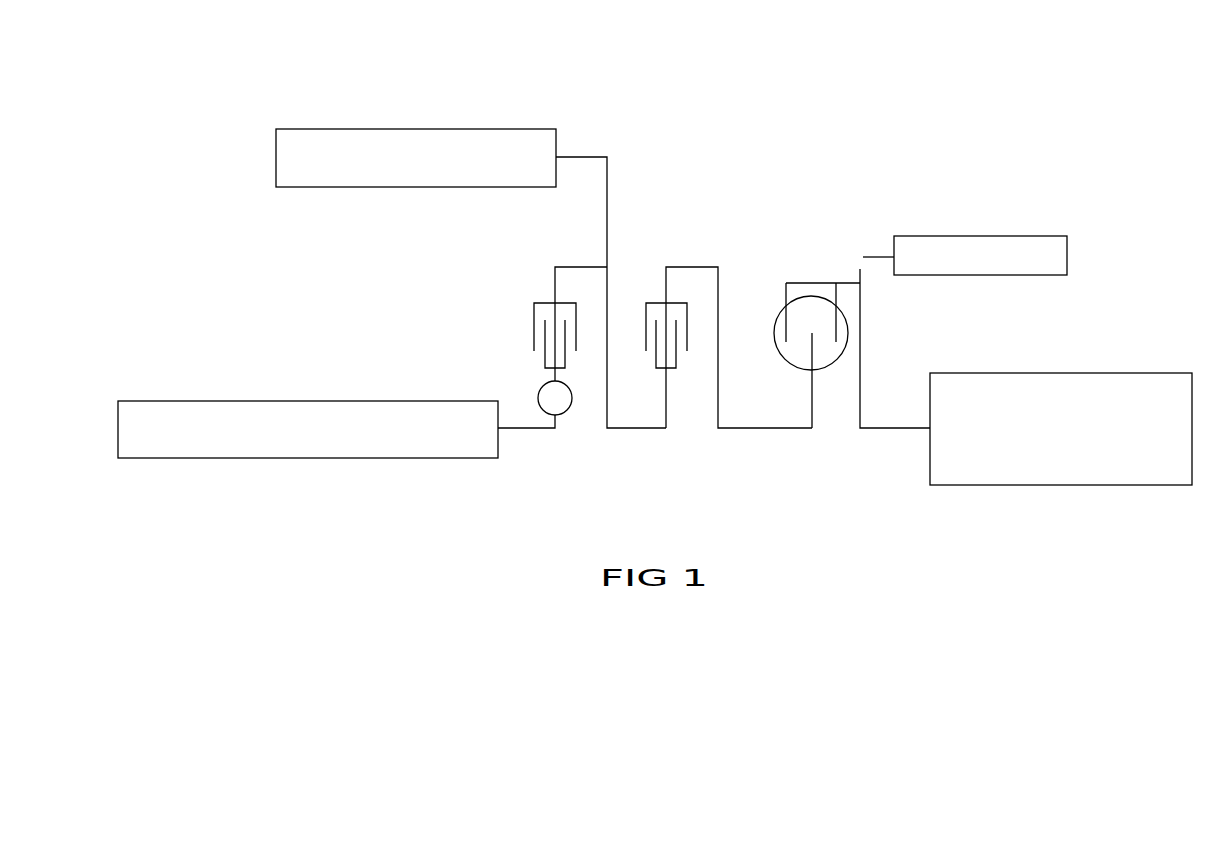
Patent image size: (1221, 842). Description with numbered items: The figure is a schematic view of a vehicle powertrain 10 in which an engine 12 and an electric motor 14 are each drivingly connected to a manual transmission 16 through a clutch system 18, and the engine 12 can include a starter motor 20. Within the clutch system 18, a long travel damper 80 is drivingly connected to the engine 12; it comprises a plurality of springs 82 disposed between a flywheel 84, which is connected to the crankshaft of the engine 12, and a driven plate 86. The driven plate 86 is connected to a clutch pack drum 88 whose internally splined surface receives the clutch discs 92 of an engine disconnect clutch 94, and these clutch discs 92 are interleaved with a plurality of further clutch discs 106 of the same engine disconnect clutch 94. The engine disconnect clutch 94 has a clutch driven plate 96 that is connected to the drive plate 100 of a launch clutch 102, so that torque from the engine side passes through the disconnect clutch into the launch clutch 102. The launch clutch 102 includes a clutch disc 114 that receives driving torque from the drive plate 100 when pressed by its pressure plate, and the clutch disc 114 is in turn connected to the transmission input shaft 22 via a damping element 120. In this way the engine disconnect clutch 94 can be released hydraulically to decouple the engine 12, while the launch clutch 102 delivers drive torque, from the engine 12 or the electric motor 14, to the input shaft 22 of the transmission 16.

The vehicle powertrain 10 is at (922, 99).
The engine 12 is at (1048, 443).
The electric motor 14 is at (403, 171).
The manual transmission 16 is at (295, 443).
The clutch system 18 is at (763, 226).
The starter motor 20 is at (967, 269).
The transmission input shaft 22 is at (525, 430).
The long travel damper 80 is at (832, 410).
The springs 82 is at (840, 355).
The flywheel 84 is at (862, 325).
The driven plate 86 is at (812, 388).
The clutch pack drum 88 is at (693, 267).
The clutch discs 92 is at (676, 325).
The engine disconnect clutch 94 is at (660, 247).
The clutch driven plate 96 is at (668, 412).
The drive plate 100 is at (553, 287).
The launch clutch 102 is at (522, 297).
The clutch discs 106 is at (672, 362).
The clutch disc 114 is at (545, 344).
The damping element 120 is at (515, 381).